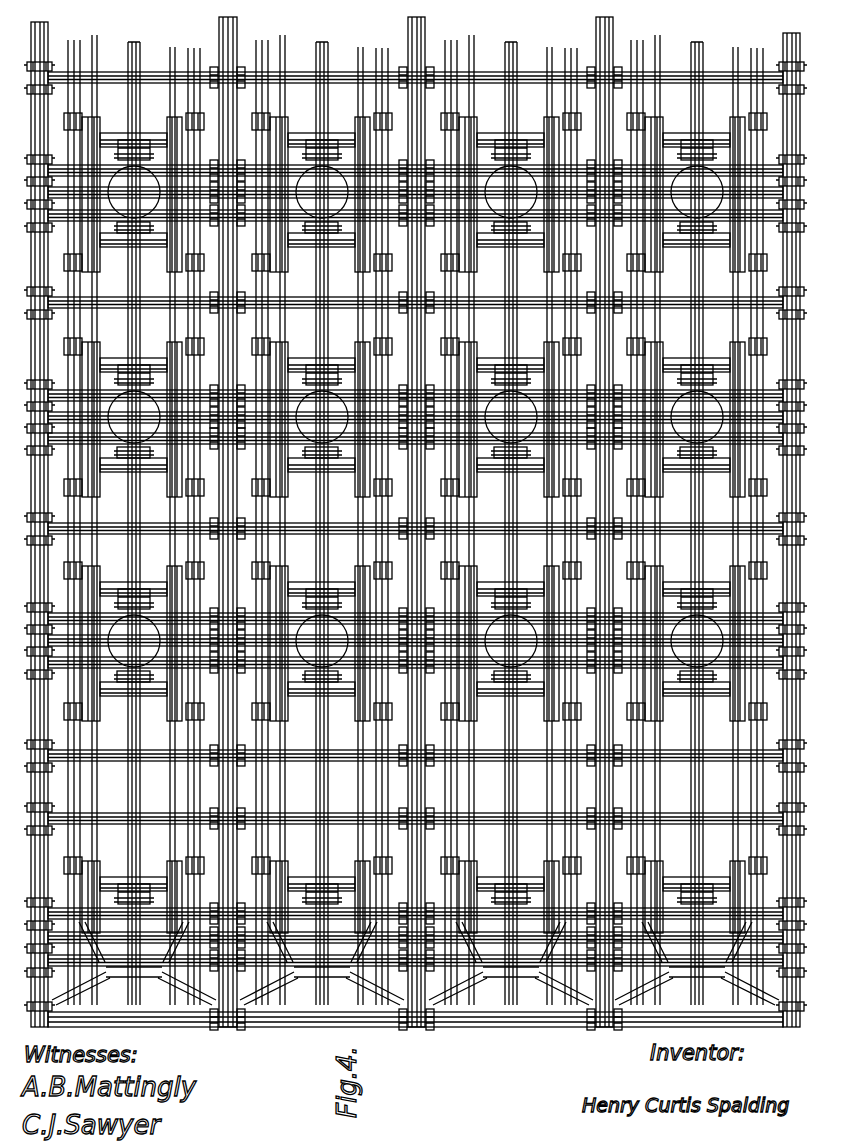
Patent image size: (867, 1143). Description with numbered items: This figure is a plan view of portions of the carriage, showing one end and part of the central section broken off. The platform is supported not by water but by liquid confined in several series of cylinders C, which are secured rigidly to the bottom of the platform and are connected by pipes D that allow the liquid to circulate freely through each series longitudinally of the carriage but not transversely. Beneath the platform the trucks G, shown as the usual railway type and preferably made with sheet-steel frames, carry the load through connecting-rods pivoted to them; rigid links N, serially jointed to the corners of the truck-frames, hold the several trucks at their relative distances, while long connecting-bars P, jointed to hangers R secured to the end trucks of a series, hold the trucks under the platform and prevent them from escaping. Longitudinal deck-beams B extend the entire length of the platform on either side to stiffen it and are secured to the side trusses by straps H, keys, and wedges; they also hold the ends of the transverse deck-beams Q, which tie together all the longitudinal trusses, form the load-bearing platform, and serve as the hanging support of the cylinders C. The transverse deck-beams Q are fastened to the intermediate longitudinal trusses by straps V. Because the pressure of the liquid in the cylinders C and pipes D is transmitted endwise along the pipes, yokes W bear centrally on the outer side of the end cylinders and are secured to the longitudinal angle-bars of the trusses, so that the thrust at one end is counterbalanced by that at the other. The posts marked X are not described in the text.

The deck-beam B is at (42, 38).
The intermediate upright post X is at (221, 34).
The strap H is at (30, 290).
The strap V is at (236, 166).
The pipe D is at (128, 48).
The cylinder C is at (133, 180).
The truck G is at (200, 678).
The rigid link N is at (388, 235).
The connecting-bar P is at (548, 338).
The hanger R is at (405, 493).
The yoke W is at (200, 850).
The transverse deck-beam Q is at (305, 1027).